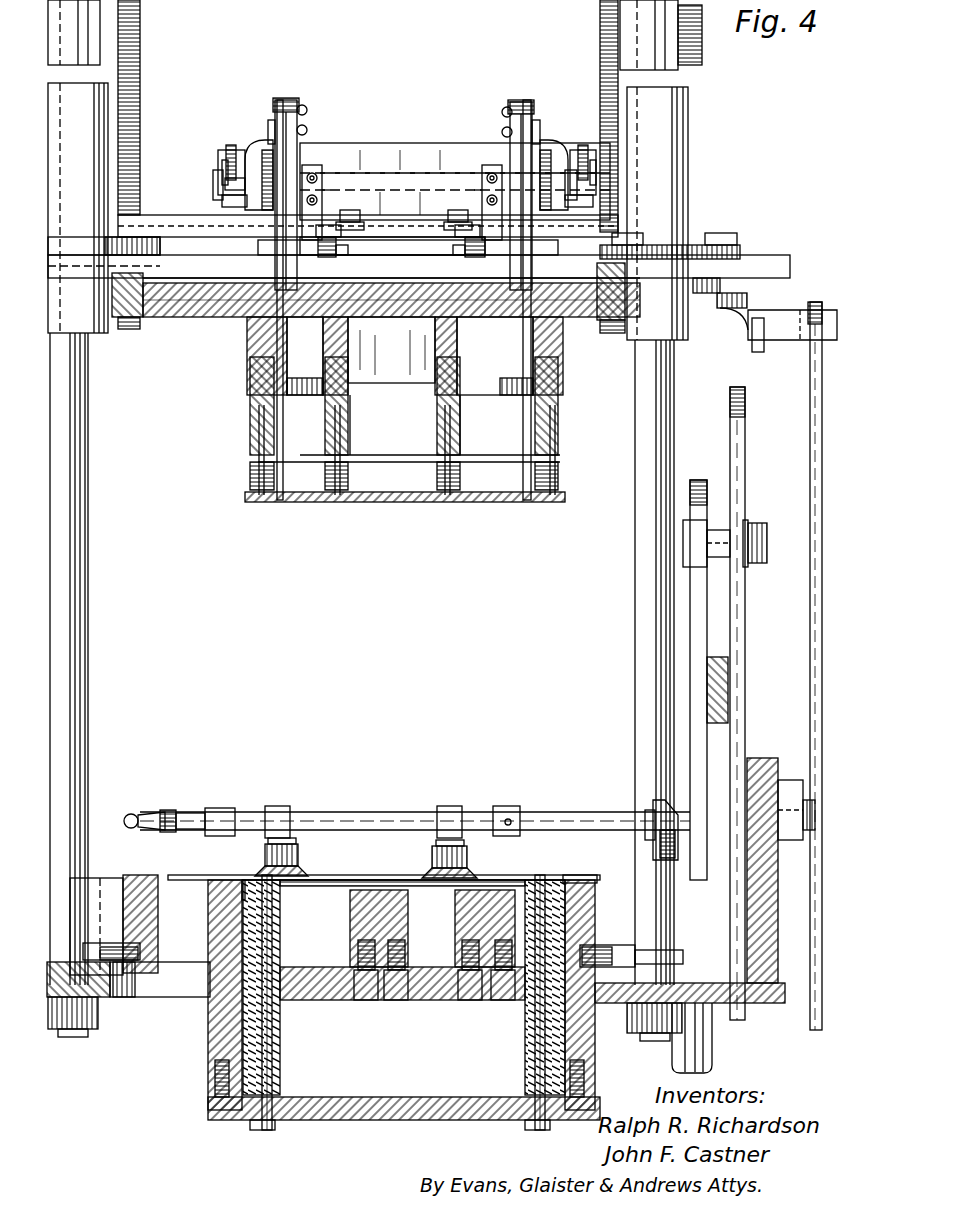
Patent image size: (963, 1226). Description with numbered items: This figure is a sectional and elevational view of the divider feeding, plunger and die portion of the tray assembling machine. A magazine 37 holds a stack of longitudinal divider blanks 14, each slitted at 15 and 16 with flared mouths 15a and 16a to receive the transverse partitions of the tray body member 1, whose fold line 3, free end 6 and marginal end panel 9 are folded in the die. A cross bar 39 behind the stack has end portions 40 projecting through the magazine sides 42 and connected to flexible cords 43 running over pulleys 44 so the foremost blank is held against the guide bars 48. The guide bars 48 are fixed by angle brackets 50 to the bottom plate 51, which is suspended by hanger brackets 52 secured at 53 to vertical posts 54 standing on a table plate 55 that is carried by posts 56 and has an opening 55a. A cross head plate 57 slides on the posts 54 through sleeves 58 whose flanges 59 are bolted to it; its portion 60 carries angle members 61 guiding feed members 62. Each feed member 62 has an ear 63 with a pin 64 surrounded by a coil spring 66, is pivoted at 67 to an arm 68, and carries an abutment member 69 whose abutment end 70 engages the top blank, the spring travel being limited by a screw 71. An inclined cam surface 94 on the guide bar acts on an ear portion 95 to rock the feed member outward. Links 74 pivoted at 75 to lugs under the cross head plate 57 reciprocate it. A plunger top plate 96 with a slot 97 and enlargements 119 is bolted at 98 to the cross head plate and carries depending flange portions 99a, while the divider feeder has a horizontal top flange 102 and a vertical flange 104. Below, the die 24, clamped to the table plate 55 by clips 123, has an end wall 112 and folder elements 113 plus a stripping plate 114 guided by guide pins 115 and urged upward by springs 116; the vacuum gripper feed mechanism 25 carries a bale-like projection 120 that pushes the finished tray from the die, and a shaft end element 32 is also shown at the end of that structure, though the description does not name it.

The main body member 1 is at (368, 878).
The fold line 3 is at (243, 880).
The free end 6 is at (570, 878).
The marginal end panel 9 is at (190, 875).
The longitudinal divider 14 is at (393, 148).
The slit 15 is at (345, 216).
The flared mouth 15a is at (348, 470).
The slit 16 is at (455, 212).
The flared mouth 16a is at (450, 222).
The die 24 is at (205, 1036).
The blank feed mechanism 25 is at (298, 868).
The shaft end knob 32 is at (133, 813).
The magazine 37 is at (213, 183).
The cross bar 39 is at (384, 170).
The end portions 40 is at (218, 178).
The magazine sides 42 is at (240, 199).
The flexible cords 43 is at (228, 158).
The pulleys 44 is at (236, 145).
The guide bars 48 is at (283, 100).
The angle brackets 50 is at (256, 140).
The bottom plate 51 is at (190, 218).
The hanger brackets 52 is at (141, 84).
The securing means 53 is at (718, 52).
The vertical posts 54 is at (88, 514).
The table plate 55 is at (718, 1005).
The opening 55a is at (120, 999).
The posts 56 is at (712, 1046).
The cross head plate 57 is at (240, 262).
The sleeves 58 is at (108, 118).
The flanges 59 is at (160, 249).
The plate portion 60 is at (395, 262).
The angle members 61 is at (338, 236).
The feed members 62 is at (307, 130).
The ear 63 is at (322, 170).
The pin 64 is at (318, 200).
The coil spring 66 is at (402, 185).
The pivot 67 is at (320, 257).
The arm 68 is at (398, 259).
The abutment member 69 is at (307, 110).
The abutment end 70 is at (270, 124).
The screw 71 is at (312, 173).
The links 74 is at (810, 446).
The pivotal connection 75 is at (800, 310).
The inclined cam surface 94 is at (530, 365).
The ear portion 95 is at (298, 105).
The top plate 96 is at (212, 318).
The slot 97 is at (233, 317).
The bolts 98 is at (126, 330).
The flange portions 99a is at (250, 404).
The horizontal top flange 102 is at (420, 272).
The vertical flange 104 is at (408, 358).
The end wall 112 is at (210, 916).
The folder elements 113 is at (455, 913).
The stripping plate 114 is at (300, 893).
The guide pins 115 is at (282, 1020).
The springs 116 is at (245, 270).
The enlargements 119 is at (405, 356).
The bale-like projection 120 is at (350, 812).
The clips 123 is at (110, 943).